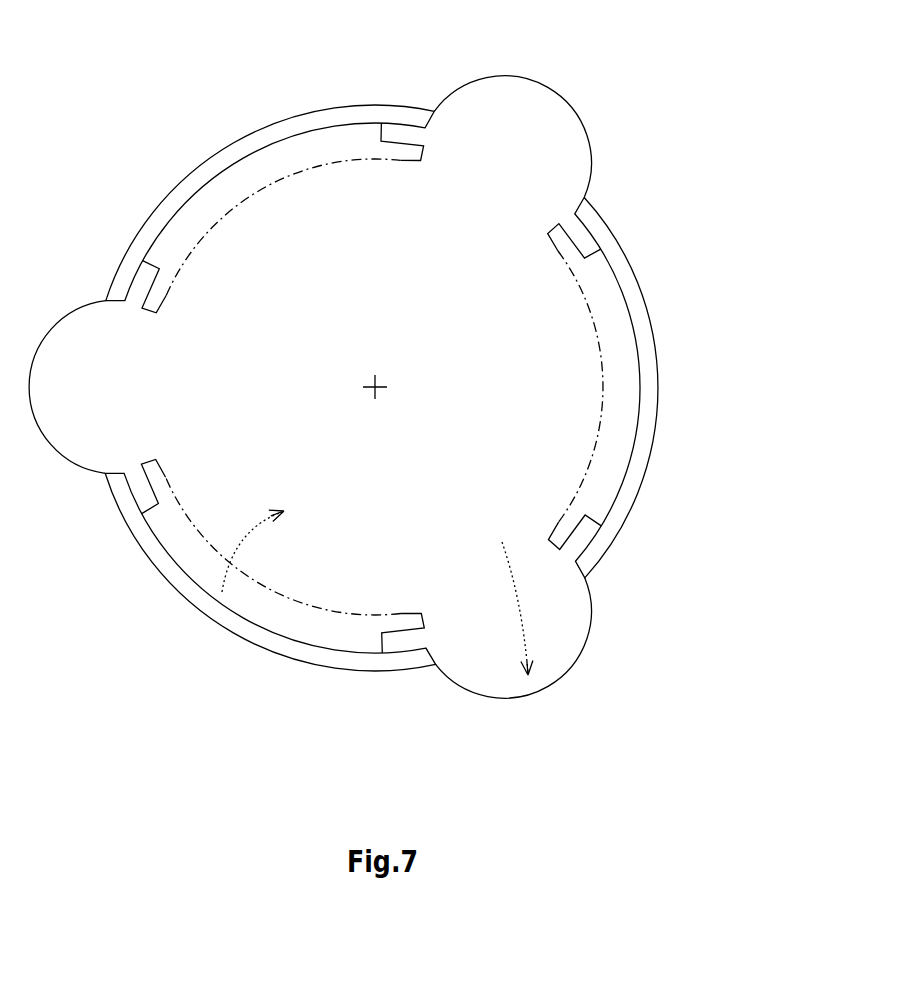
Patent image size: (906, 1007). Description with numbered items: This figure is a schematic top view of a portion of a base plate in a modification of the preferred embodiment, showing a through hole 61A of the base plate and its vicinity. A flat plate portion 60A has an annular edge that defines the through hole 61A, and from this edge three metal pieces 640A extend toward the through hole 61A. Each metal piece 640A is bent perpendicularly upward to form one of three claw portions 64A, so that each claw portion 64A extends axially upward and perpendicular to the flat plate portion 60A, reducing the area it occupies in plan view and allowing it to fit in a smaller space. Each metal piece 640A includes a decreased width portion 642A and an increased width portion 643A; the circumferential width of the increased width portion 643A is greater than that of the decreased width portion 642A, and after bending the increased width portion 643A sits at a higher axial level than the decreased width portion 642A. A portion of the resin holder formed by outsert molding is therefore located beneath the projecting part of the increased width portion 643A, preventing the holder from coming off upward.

The flat plate portion 60A is at (717, 342).
The through hole 61A is at (223, 580).
The claw portion 64A is at (222, 163).
The metal piece 640A is at (371, 388).
The decreased width portion 642A is at (270, 227).
The increased width portion 643A is at (403, 165).